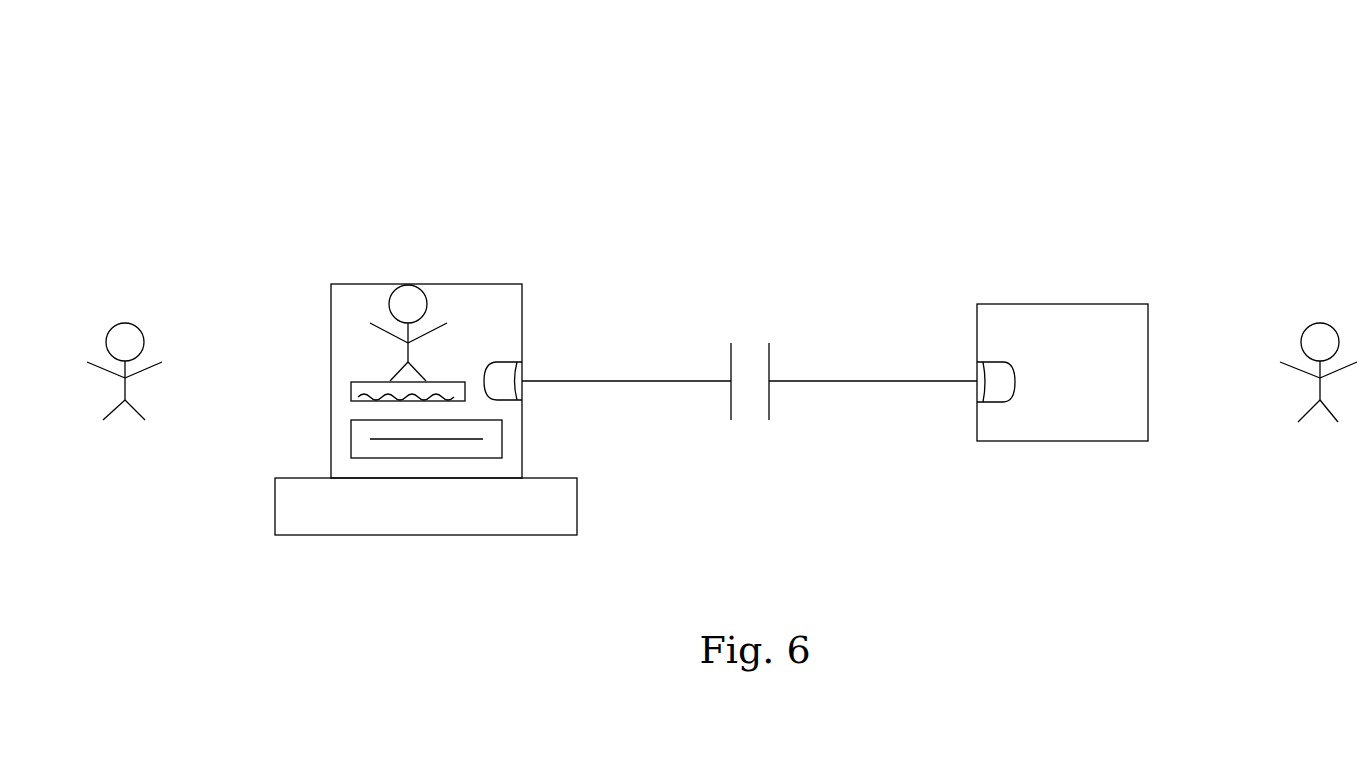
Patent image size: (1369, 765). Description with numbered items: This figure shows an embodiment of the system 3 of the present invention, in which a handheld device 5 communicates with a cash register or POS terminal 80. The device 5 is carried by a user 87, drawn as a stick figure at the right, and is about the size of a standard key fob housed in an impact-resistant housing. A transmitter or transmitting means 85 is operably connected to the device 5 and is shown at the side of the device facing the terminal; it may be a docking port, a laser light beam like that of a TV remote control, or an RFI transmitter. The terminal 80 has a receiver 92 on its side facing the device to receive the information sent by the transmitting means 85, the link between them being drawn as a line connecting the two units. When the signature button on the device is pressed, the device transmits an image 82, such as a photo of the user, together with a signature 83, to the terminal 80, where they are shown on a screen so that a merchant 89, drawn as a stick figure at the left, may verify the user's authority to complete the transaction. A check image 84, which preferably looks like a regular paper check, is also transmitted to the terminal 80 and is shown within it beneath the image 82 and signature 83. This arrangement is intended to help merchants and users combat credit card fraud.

The system 3 is at (1178, 135).
The device 5 is at (1072, 302).
The POS terminal 80 is at (506, 280).
The image 82 is at (408, 300).
The signature 83 is at (357, 399).
The check image 84 is at (351, 439).
The transmitting means 85 is at (978, 378).
The user 87 is at (1318, 342).
The merchant 89 is at (125, 340).
The receiver 92 is at (508, 378).